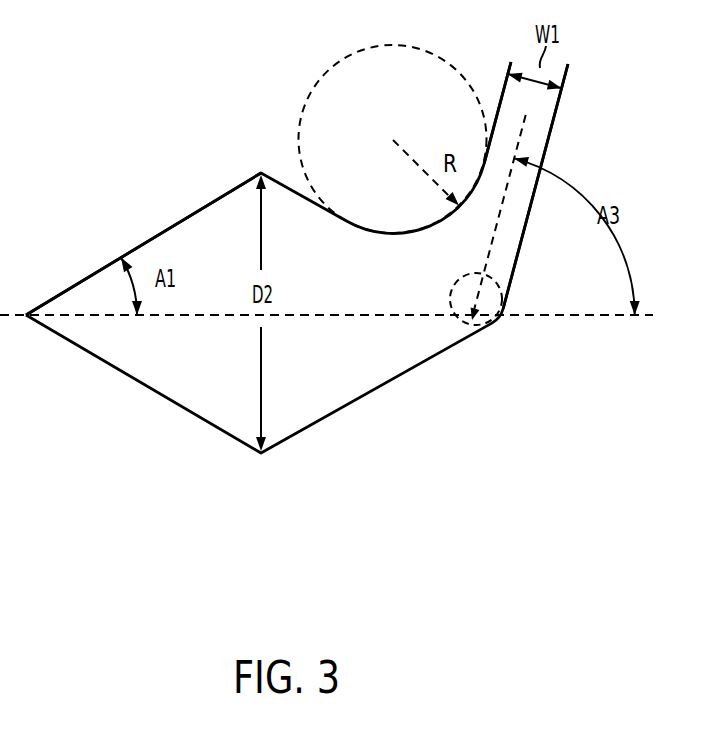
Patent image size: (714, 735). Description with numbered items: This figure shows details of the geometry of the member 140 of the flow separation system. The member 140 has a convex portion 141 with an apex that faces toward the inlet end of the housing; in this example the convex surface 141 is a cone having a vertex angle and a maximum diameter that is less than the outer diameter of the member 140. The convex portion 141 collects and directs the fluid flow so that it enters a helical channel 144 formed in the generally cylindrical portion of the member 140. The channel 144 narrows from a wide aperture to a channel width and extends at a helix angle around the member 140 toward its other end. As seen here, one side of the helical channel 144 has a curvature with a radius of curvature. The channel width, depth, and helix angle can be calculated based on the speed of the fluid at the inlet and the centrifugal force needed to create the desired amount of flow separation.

The second member 140 is at (346, 484).
The convex portion 141 is at (163, 224).
The helical channel 144 is at (540, 131).